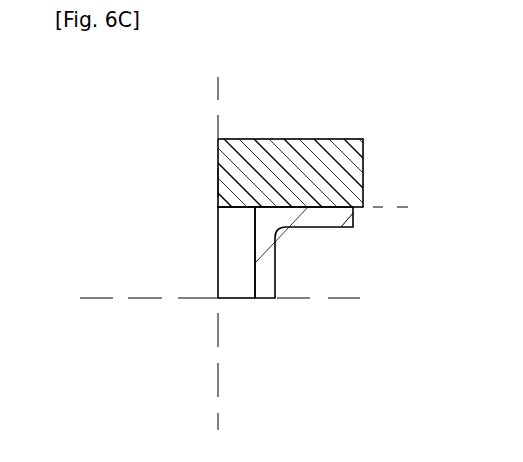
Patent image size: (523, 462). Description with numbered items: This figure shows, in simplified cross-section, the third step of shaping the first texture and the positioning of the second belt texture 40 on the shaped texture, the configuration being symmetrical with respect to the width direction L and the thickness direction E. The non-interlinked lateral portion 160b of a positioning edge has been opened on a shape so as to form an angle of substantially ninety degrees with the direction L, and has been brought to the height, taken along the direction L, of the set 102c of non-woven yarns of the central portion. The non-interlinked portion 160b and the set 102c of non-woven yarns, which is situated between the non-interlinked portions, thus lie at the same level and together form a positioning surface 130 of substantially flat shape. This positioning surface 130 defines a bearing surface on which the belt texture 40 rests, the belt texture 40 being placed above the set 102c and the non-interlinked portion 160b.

The second belt texture 40 is at (335, 150).
The positioning surface 130 is at (388, 207).
The non-interlinked lateral portion 160b is at (355, 212).
The set of non-woven yarns 102c is at (237, 300).
The thickness direction E is at (347, 299).
The width direction L is at (218, 138).